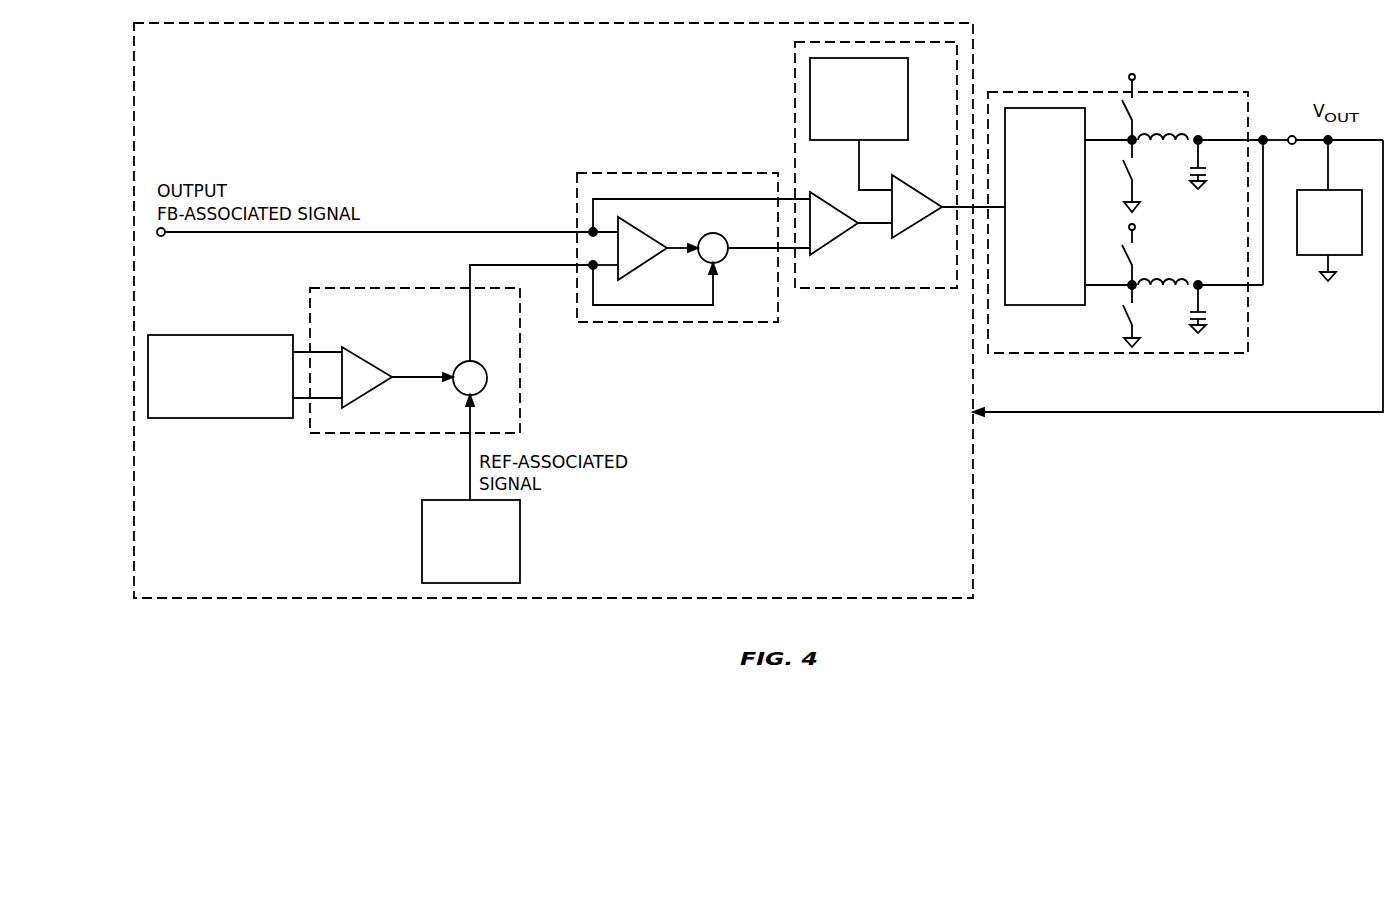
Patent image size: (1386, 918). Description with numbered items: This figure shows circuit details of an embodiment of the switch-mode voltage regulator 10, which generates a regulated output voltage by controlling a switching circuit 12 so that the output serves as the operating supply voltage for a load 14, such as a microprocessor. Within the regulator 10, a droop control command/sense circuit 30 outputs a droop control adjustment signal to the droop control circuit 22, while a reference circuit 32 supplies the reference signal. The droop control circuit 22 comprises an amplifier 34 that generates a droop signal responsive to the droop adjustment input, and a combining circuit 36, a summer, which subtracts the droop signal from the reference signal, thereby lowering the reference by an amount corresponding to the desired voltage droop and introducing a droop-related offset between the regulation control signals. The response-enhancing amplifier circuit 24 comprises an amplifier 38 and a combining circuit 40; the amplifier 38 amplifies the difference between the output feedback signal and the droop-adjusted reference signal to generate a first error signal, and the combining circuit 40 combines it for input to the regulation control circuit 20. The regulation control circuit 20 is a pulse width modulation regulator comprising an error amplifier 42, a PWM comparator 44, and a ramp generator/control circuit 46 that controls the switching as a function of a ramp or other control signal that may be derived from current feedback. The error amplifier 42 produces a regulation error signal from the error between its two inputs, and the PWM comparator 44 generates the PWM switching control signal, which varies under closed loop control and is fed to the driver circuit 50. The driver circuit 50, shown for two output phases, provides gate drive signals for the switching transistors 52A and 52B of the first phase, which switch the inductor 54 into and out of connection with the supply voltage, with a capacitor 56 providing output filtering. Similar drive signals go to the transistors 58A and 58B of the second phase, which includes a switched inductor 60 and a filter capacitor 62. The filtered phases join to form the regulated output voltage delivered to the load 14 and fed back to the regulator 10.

The voltage regulator 10 is at (173, 576).
The switching circuit 12 is at (1025, 338).
The load 14 is at (1319, 245).
The regulation control circuit 20 is at (918, 273).
The droop control circuit 22 is at (377, 428).
The response-enhancing amplifier circuit 24 is at (740, 306).
The droop control command/sense circuit 30 is at (209, 408).
The reference circuit 32 is at (460, 573).
The amplifier 34 is at (378, 370).
The combining circuit 36 is at (460, 391).
The amplifier 38 is at (645, 263).
The combining circuit 40 is at (724, 238).
The error amplifier 42 is at (838, 237).
The PWM comparator 44 is at (910, 187).
The ramp generator/control circuit 46 is at (848, 130).
The driver circuit 50 is at (1034, 243).
The switching transistor 52A is at (1125, 110).
The switching transistor 52B is at (1125, 171).
The inductor 54 is at (1170, 134).
The capacitor 56 is at (1201, 172).
The transistor 58A is at (1125, 254).
The transistor 58B is at (1125, 314).
The switched inductor 60 is at (1170, 279).
The filter capacitor 62 is at (1201, 316).